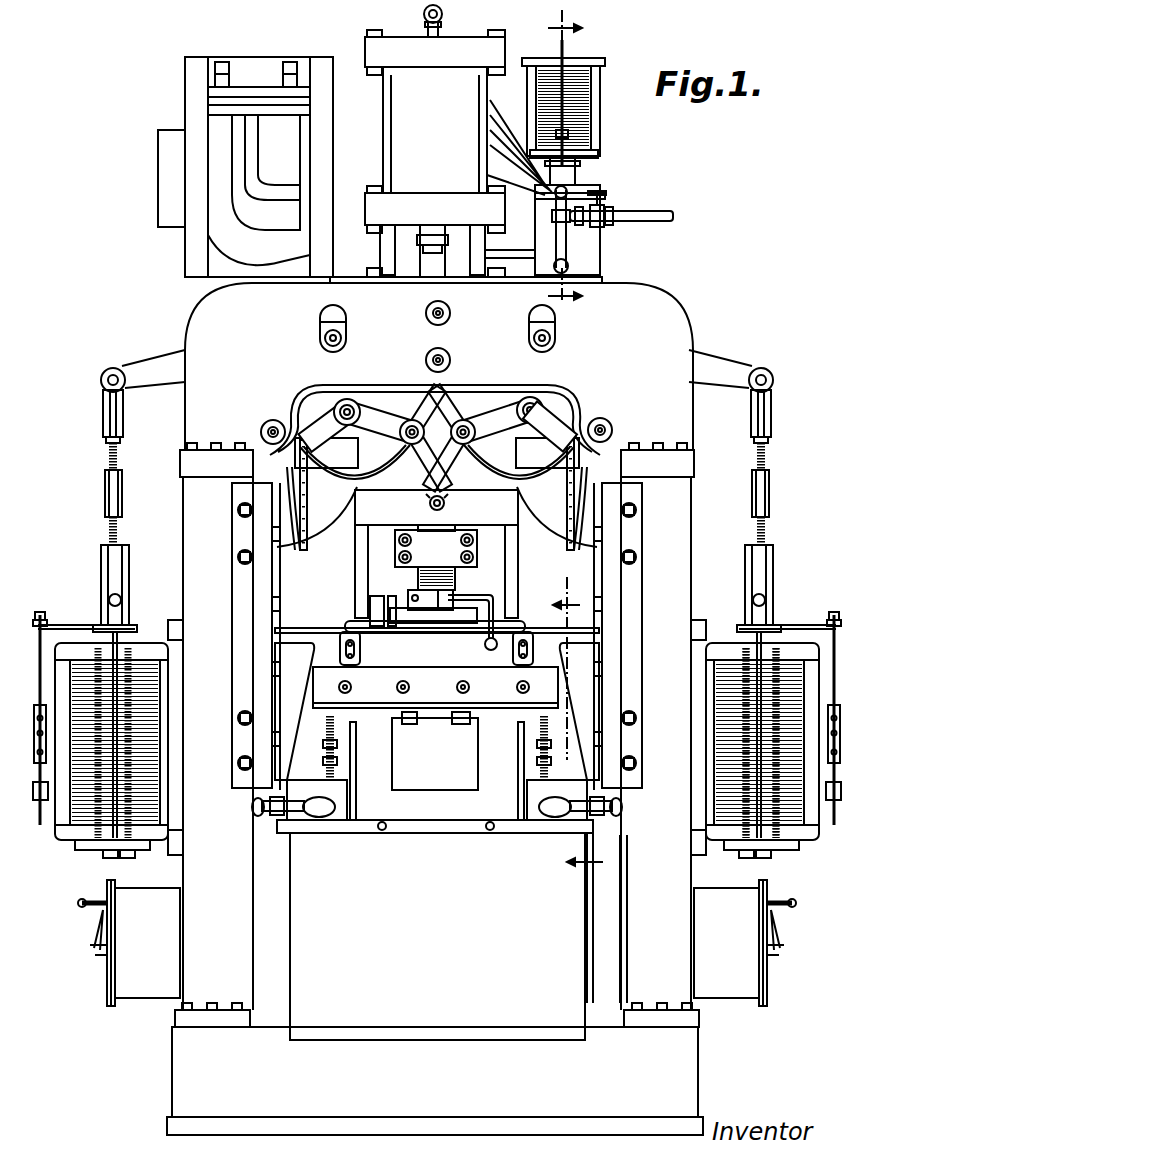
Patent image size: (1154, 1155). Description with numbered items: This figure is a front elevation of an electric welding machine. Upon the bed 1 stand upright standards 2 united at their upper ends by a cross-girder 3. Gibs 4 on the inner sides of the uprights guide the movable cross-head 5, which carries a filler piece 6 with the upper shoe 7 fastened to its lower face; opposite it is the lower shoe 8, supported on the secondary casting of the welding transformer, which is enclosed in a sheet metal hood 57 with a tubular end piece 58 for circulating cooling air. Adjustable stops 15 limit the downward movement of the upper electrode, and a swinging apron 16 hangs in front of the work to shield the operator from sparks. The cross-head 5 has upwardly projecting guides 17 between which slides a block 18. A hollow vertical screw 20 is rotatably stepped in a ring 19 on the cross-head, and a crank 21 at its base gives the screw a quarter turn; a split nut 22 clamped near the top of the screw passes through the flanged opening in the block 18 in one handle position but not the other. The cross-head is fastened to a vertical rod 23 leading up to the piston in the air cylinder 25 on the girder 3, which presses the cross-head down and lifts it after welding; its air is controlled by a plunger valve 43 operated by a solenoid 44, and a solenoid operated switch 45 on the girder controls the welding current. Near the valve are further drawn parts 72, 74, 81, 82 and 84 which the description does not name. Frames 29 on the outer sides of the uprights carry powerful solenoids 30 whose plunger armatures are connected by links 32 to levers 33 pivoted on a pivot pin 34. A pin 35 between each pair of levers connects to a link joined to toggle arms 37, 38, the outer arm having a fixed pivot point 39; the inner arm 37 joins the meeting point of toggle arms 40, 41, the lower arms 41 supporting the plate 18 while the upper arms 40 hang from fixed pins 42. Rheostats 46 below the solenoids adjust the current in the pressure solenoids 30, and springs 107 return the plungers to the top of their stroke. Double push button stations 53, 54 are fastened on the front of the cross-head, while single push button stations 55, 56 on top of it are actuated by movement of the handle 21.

The bed 1 is at (435, 1081).
The upright standards 2 is at (437, 735).
The cross-girder 3 is at (665, 315).
The gibs 4 is at (266, 620).
The movable cross-head 5 is at (318, 648).
The filler piece 6 is at (537, 688).
The shoe 7 is at (437, 768).
The lower shoe 8 is at (564, 727).
The adjustable stops 15 is at (535, 762).
The swinging apron 16 is at (408, 768).
The guides 17 is at (437, 595).
The sliding block 18 is at (436, 554).
The ring 19 is at (405, 623).
The hollow vertical screw 20 is at (456, 590).
The crank 21 is at (484, 643).
The split nut 22 is at (436, 548).
The vertical rod 23 is at (430, 258).
The air cylinder 25 is at (458, 119).
The frames 29 is at (80, 655).
The solenoids 30 is at (730, 682).
The links 32 is at (770, 492).
The levers 33 is at (140, 365).
The pivot pin 34 is at (426, 314).
The pin 35 is at (740, 368).
The inner toggle arm 37 is at (492, 410).
The outer toggle arm 38 is at (560, 412).
The pivot point 39 is at (264, 425).
The upper toggle arms 40 is at (432, 392).
The lower toggle arms 41 is at (455, 455).
The fixed pins 42 is at (448, 356).
The valve 43 is at (580, 240).
The solenoid 44 is at (585, 118).
The solenoid operated switch 45 is at (165, 155).
The rheostats 46 is at (127, 975).
The double push button station 53 is at (435, 687).
The double push button station 54 is at (522, 655).
The single push button station 55 is at (382, 592).
The single push button station 56 is at (493, 596).
The sheet metal hood 57 is at (437, 910).
The tubular end piece 58 is at (622, 888).
The frame 72 is at (604, 128).
The column 74 is at (576, 173).
The rod 81 is at (567, 92).
The top cap 82 is at (575, 62).
The pipe 84 is at (596, 205).
The springs 107 is at (745, 758).